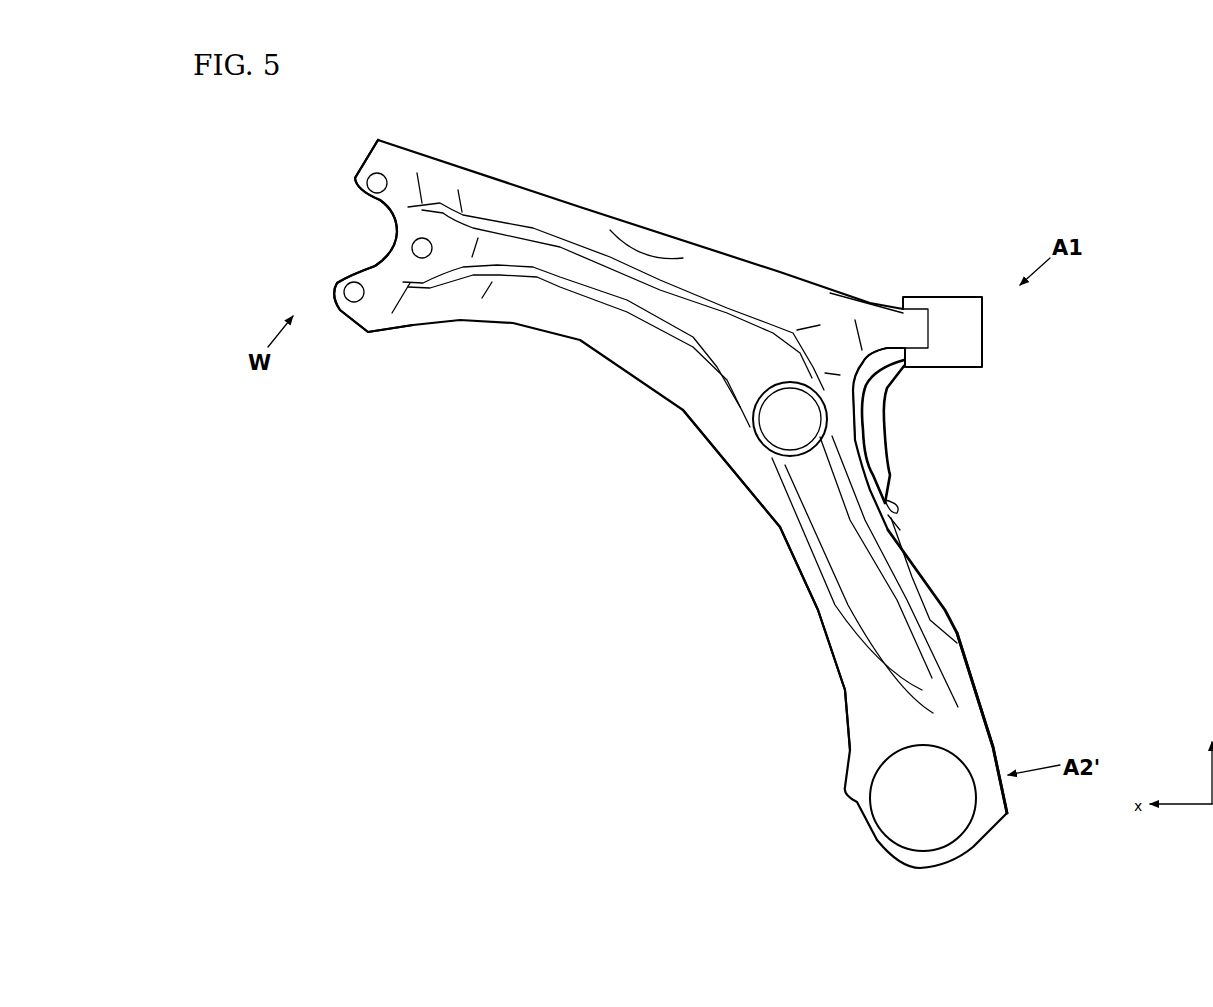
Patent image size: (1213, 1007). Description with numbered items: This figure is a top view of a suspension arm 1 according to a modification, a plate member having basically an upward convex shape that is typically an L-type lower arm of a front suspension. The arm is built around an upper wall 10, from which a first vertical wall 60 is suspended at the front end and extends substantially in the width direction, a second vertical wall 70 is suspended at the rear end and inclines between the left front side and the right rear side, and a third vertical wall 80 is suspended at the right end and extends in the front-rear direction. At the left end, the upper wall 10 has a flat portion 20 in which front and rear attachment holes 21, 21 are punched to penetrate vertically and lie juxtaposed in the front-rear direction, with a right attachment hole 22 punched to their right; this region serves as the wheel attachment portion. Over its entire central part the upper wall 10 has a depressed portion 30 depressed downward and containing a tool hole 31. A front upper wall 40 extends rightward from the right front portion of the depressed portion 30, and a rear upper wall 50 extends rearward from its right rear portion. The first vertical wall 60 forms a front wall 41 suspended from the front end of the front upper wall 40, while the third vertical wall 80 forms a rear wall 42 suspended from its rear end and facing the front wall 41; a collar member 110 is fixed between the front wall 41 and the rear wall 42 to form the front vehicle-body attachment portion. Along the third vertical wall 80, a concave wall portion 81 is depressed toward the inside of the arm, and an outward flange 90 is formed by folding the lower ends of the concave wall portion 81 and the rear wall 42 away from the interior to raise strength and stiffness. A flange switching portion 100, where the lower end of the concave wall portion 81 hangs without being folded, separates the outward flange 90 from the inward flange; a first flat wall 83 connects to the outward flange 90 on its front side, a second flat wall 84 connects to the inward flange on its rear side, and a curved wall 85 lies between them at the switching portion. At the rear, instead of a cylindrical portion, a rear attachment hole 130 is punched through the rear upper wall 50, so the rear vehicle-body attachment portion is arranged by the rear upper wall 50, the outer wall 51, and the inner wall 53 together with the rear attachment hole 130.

The suspension arm 1 is at (869, 170).
The upper wall 10 is at (547, 218).
The flat portion 20 is at (375, 327).
The front and rear attachment holes 21 is at (366, 180).
The right attachment hole 22 is at (412, 245).
The depressed portion 30 is at (690, 313).
The tool hole 31 is at (773, 398).
The front upper wall 40 is at (912, 328).
The front wall 41 is at (870, 308).
The rear wall 42 is at (897, 362).
The rear upper wall 50 is at (945, 725).
The outer wall 51 is at (842, 690).
The inner wall 53 is at (995, 750).
The first vertical wall 60 is at (653, 200).
The second vertical wall 70 is at (735, 530).
The third vertical wall 80 is at (978, 618).
The concave wall portion 81 is at (937, 458).
The first flat wall 83 is at (878, 470).
The second flat wall 84 is at (920, 577).
The curved wall 85 is at (887, 506).
The outward flange 90 is at (884, 402).
The flange switching portion 100 is at (902, 522).
The collar member 110 is at (970, 337).
The rear attachment hole 130 is at (893, 833).